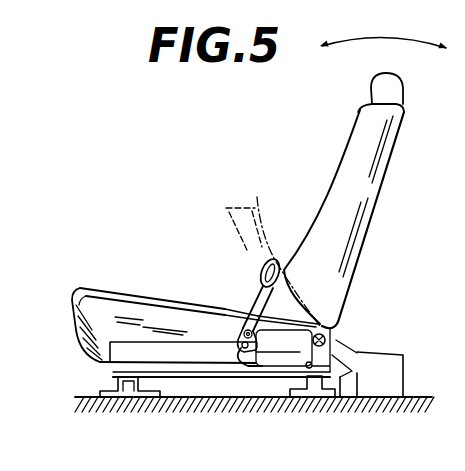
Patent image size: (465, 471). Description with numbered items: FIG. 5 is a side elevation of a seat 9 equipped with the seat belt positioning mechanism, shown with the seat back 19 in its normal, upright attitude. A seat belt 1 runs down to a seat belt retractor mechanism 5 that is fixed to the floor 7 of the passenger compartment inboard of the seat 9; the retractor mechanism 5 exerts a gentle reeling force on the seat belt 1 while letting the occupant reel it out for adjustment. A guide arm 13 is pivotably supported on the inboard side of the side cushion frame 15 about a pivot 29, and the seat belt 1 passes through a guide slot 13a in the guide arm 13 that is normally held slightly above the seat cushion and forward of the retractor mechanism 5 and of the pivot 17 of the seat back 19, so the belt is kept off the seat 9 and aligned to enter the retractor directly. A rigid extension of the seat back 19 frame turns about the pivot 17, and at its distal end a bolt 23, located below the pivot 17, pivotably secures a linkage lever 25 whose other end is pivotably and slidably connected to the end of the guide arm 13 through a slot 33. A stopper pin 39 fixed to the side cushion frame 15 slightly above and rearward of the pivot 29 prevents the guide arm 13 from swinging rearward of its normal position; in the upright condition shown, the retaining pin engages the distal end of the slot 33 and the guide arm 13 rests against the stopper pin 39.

The seat belt 1 is at (273, 250).
The seat belt retractor mechanism 5 is at (388, 345).
The floor 7 is at (363, 397).
The seat 9 is at (102, 312).
The guide arm 13 is at (245, 285).
The guide slot 13a is at (279, 268).
The side cushion frame 15 is at (173, 353).
The pivot point 17 is at (346, 322).
The seat back 19 is at (390, 174).
The bolt 23 is at (311, 392).
The linkage lever 25 is at (270, 384).
The pivot of the guide arm 29 is at (217, 347).
The slot 33 is at (243, 343).
The stopper pin 39 is at (250, 318).